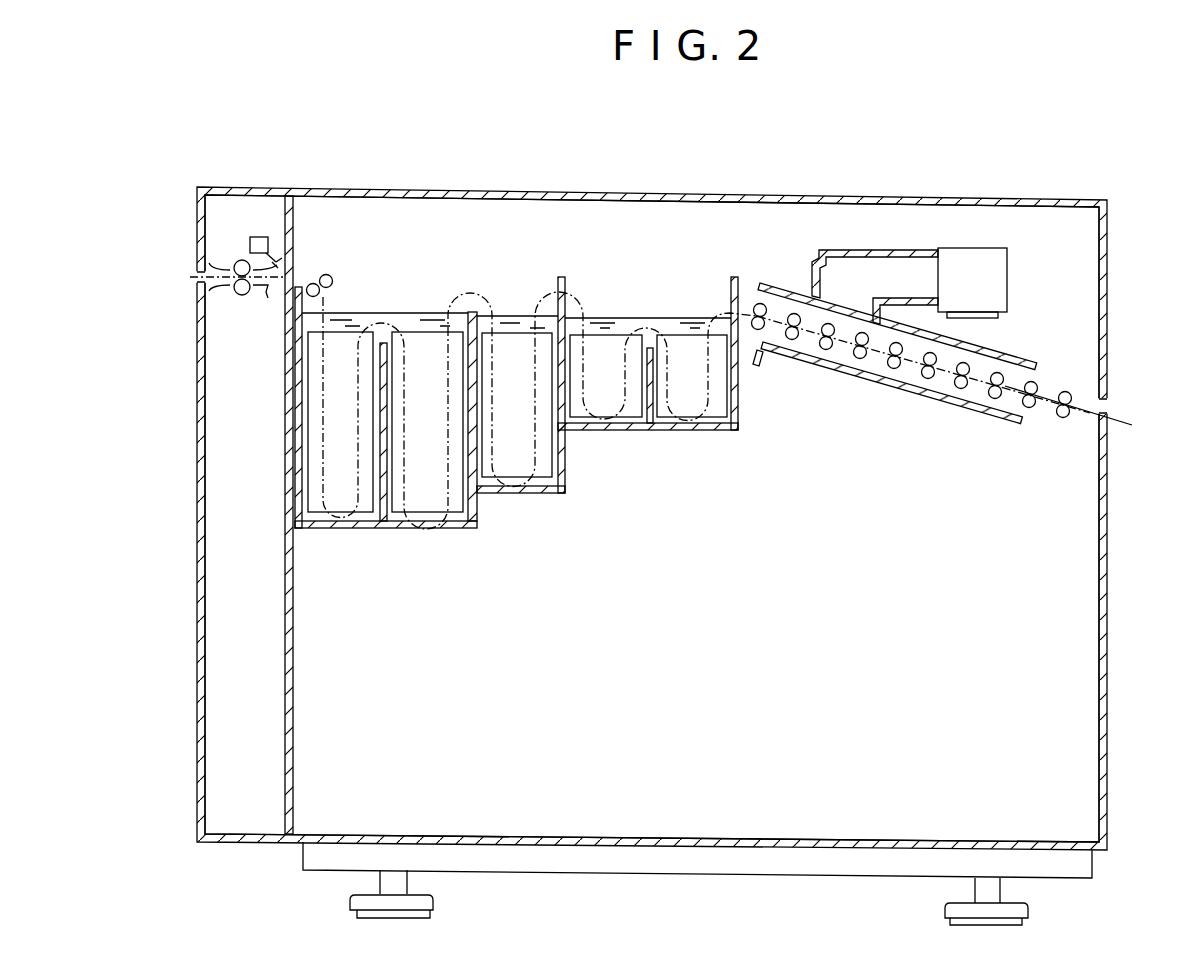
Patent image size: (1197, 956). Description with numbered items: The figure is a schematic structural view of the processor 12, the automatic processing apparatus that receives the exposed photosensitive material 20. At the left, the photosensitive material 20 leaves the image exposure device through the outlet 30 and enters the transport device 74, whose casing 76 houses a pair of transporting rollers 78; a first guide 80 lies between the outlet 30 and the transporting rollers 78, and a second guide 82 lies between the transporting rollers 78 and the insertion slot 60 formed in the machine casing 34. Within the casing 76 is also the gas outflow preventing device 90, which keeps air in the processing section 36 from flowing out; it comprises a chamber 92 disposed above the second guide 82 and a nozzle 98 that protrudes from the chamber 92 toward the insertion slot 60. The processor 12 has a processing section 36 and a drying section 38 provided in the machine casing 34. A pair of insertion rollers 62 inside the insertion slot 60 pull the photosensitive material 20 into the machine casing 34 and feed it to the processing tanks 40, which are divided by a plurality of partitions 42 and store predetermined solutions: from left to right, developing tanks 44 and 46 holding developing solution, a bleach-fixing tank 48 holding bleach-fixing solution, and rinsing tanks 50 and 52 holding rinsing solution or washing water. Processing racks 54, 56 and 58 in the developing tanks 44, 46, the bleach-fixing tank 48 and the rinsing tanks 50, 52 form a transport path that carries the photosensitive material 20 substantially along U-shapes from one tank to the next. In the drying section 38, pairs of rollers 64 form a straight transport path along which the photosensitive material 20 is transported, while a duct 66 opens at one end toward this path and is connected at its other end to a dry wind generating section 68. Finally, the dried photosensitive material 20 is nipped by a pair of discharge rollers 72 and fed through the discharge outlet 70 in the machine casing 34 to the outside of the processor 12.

The processor 12 is at (958, 182).
The photosensitive material 20 is at (1088, 412).
The outlet 30 is at (199, 253).
The machine casing 34 is at (709, 192).
The processing section 36 is at (636, 203).
The drying section 38 is at (876, 426).
The processing tanks 40 is at (650, 432).
The partitions 42 is at (666, 330).
The developing tank 44 is at (352, 312).
The developing tank 46 is at (428, 318).
The bleach-fixing tank 48 is at (560, 300).
The rinsing tank 50 is at (630, 320).
The rinsing tank 52 is at (714, 320).
The processing rack 54 is at (412, 510).
The processing rack 56 is at (505, 480).
The processing rack 58 is at (689, 427).
The insertion slot 60 is at (294, 272).
The pair of insertion rollers 62 is at (331, 277).
The pairs of rollers 64 is at (1031, 408).
The duct 66 is at (868, 258).
The dry wind generating section 68 is at (1005, 254).
The discharge outlet 70 is at (1103, 402).
The pair of discharge rollers 72 is at (1063, 420).
The transport device 74 is at (225, 318).
The casing 76 is at (232, 191).
The pair of transporting rollers 78 is at (234, 297).
The first guide 80 is at (212, 297).
The second guide 82 is at (266, 298).
The gas outflow preventing device 90 is at (270, 222).
The chamber 92 is at (254, 237).
The nozzle 98 is at (284, 252).